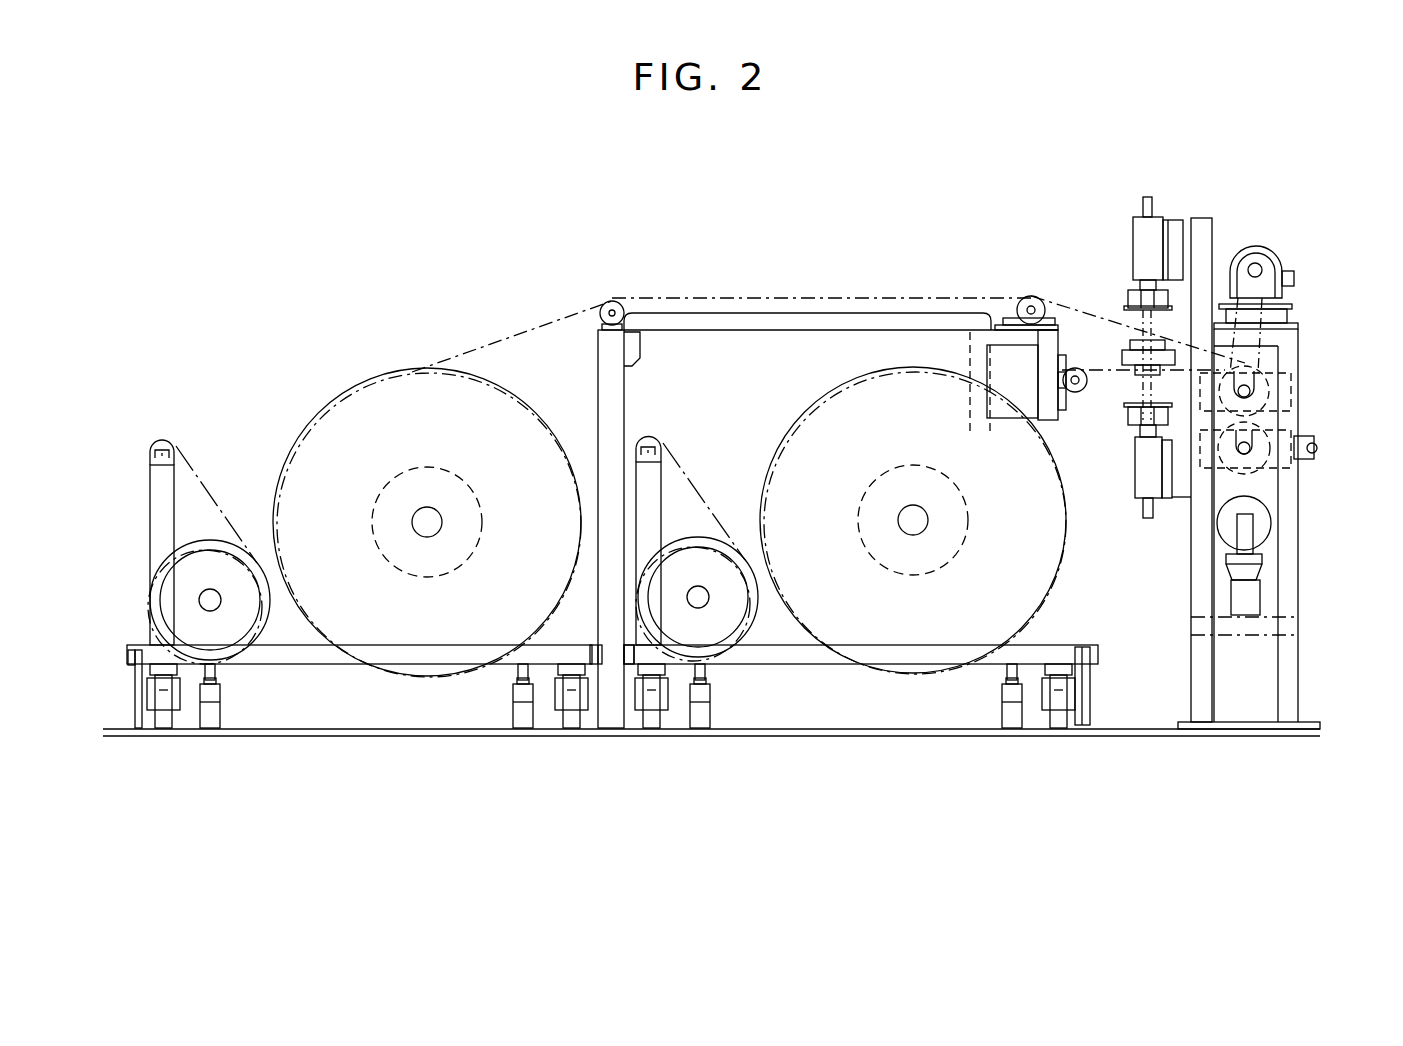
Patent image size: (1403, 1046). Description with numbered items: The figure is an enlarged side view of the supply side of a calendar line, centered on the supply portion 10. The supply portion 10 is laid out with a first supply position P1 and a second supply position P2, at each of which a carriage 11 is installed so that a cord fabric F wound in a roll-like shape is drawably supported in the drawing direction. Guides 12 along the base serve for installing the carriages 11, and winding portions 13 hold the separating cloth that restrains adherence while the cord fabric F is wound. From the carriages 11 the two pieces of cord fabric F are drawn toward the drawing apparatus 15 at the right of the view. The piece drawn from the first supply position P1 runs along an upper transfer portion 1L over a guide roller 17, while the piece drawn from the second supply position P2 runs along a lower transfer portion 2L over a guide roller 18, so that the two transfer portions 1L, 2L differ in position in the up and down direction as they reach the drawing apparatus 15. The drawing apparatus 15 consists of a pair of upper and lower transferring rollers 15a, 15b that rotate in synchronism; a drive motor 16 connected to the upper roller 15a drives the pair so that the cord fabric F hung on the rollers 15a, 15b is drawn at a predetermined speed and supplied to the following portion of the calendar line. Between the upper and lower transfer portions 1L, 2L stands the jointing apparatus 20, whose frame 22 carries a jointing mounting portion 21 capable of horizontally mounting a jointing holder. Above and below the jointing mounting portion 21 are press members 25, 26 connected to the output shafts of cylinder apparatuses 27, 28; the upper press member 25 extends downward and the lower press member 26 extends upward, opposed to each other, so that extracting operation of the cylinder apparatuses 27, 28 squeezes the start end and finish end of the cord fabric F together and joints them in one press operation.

The supply portion 10 is at (305, 225).
The carriage 11 is at (338, 666).
The guide 12 is at (128, 658).
The winding portion of separating cloth 13 is at (245, 615).
The drawing apparatus 15 is at (1284, 424).
The upper transferring roller 15a is at (1267, 386).
The lower transferring roller 15b is at (1260, 452).
The drive motor 16 is at (1276, 257).
The guide roller 17 is at (1025, 298).
The guide roller 18 is at (1078, 393).
The jointing apparatus 20 is at (1158, 366).
The jointing mounting portion 21 is at (1269, 336).
The frame 22 is at (1200, 218).
The upper press member 25 is at (1170, 300).
The lower press member 26 is at (1133, 427).
The cylinder apparatus 27 is at (1140, 230).
The cylinder apparatus 28 is at (1160, 480).
The transfer portion 1L is at (1080, 310).
The transfer portion 2L is at (1108, 370).
The cord fabric F is at (523, 333).
The first supply position P1 is at (452, 742).
The second supply position P2 is at (950, 742).